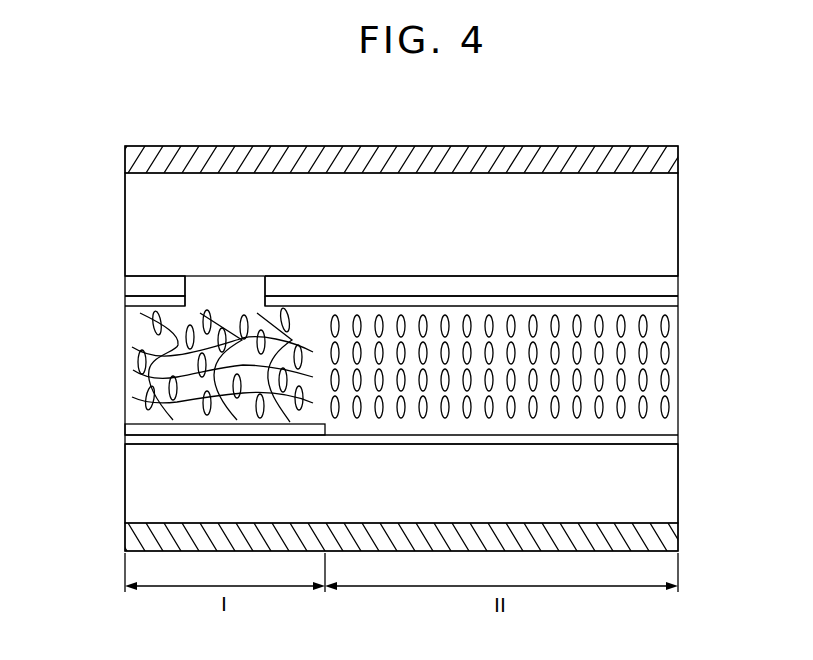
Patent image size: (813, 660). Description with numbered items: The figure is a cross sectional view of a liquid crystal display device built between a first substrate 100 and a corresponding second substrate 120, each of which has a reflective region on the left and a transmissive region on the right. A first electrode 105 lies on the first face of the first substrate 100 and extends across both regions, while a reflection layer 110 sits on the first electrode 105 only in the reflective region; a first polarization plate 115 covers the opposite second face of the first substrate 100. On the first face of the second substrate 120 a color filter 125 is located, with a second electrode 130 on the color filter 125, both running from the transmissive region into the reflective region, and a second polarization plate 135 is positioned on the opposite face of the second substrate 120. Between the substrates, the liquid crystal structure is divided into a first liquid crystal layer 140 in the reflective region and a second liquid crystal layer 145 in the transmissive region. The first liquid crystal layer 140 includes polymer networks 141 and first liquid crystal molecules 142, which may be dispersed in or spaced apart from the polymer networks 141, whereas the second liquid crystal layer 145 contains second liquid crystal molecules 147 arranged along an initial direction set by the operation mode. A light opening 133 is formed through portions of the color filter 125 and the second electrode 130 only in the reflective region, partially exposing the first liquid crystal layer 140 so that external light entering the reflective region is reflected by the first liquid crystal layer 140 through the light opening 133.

The first substrate 100 is at (678, 489).
The first electrode 105 is at (678, 440).
The reflection layer 110 is at (127, 427).
The first polarization plate 115 is at (678, 540).
The second substrate 120 is at (678, 224).
The color filter 125 is at (678, 284).
The second electrode 130 is at (678, 303).
The light opening 133 is at (235, 291).
The second polarization plate 135 is at (678, 161).
The first liquid crystal layer 140 is at (162, 364).
The polymer networks 141 is at (135, 375).
The first liquid crystal molecules 142 is at (140, 355).
The second liquid crystal layer 145 is at (564, 370).
The second liquid crystal molecules 147 is at (670, 355).